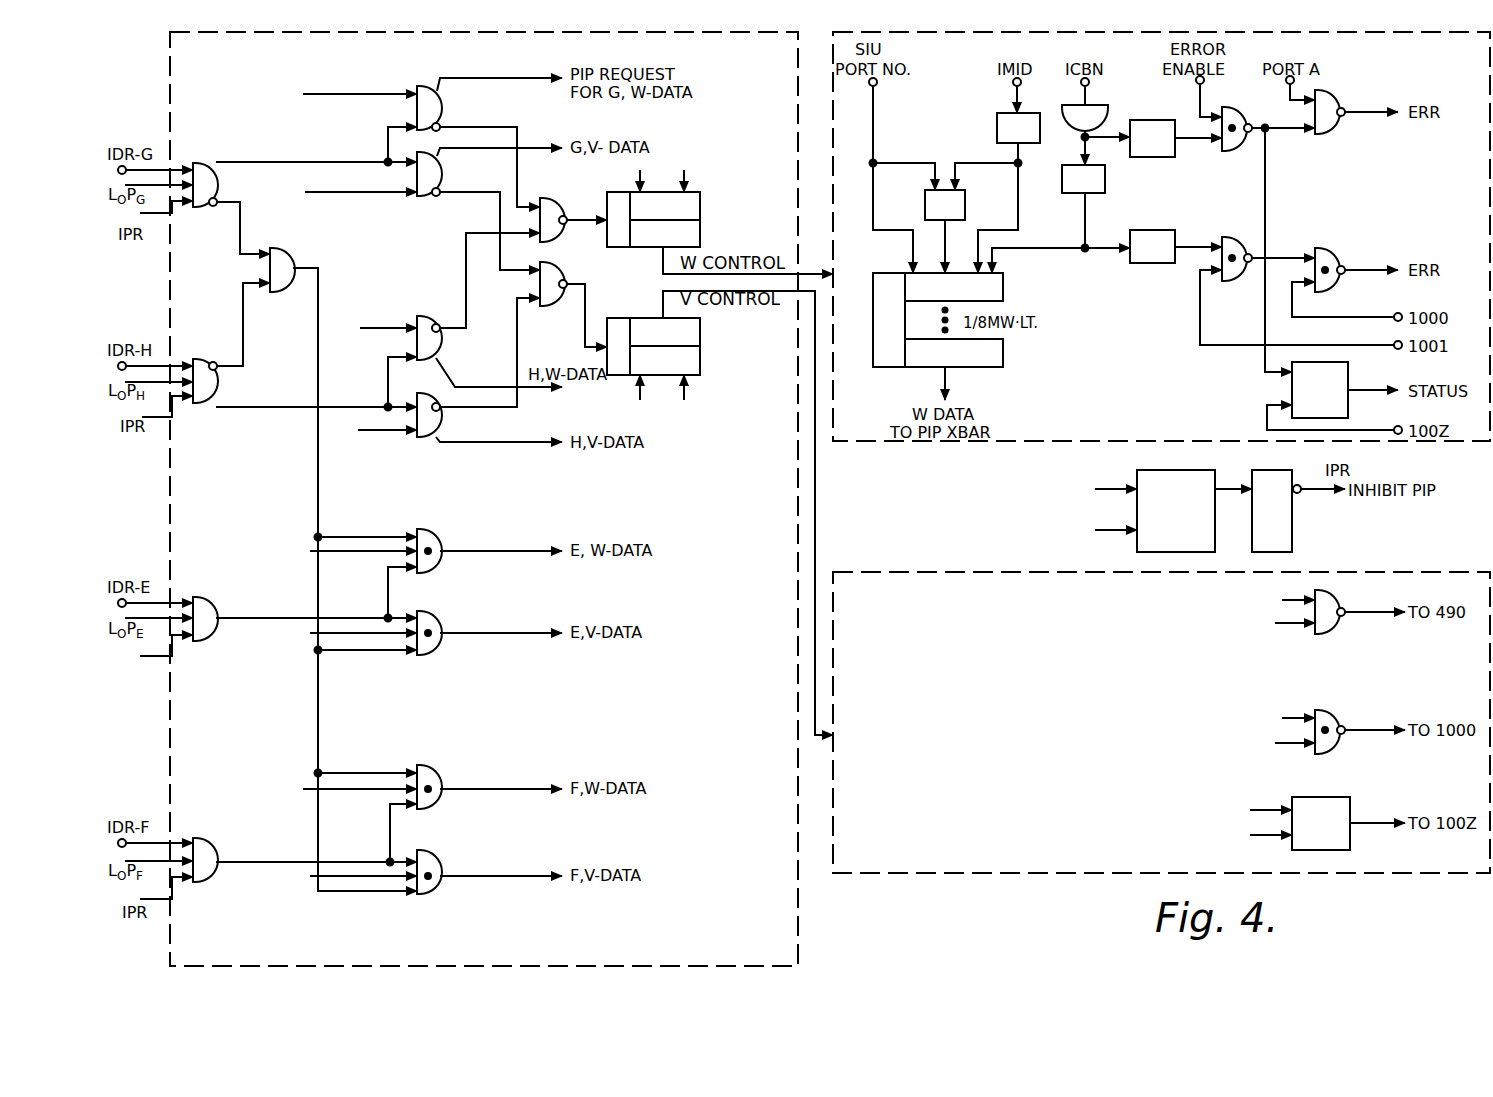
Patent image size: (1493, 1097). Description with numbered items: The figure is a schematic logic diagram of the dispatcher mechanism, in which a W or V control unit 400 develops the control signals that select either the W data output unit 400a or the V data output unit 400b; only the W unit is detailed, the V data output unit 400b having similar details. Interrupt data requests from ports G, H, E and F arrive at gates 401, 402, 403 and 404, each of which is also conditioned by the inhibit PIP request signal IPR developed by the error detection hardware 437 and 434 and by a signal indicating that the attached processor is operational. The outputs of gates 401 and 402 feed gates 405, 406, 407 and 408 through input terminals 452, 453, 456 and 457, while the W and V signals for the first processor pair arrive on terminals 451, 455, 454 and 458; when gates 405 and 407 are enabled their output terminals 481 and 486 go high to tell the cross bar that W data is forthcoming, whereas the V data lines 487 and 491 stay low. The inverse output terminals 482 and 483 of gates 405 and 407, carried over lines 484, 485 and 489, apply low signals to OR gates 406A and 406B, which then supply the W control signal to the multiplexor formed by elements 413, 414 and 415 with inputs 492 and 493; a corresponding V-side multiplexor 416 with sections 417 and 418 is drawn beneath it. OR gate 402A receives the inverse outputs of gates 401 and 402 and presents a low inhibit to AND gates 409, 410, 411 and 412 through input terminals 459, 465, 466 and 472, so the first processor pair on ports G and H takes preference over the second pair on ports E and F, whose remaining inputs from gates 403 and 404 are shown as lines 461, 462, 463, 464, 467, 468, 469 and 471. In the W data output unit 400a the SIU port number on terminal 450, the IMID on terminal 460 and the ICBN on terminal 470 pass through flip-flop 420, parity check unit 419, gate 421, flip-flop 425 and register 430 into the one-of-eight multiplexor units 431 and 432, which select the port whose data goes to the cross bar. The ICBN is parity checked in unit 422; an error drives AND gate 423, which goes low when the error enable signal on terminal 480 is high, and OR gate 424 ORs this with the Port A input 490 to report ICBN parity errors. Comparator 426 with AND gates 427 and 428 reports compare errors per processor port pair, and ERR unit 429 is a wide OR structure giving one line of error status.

The W or V control unit 400 is at (720, 933).
The W data output unit 400a is at (1150, 425).
The V data output unit 400b is at (1154, 853).
The gate 401 is at (202, 165).
The gate 402 is at (200, 402).
The OR gate 402A is at (283, 252).
The gate 403 is at (210, 612).
The gate 404 is at (210, 852).
The gate 405 is at (425, 87).
The gate 406 is at (441, 153).
The OR gate 406A is at (549, 200).
The OR gate 406B is at (548, 266).
The gate 407 is at (423, 317).
The gate 408 is at (419, 394).
The AND gate 409 is at (433, 538).
The AND gate 410 is at (448, 616).
The AND gate 411 is at (432, 766).
The AND gate 412 is at (448, 890).
The multiplexor element 413 is at (605, 205).
The multiplexor element 414 is at (703, 206).
The multiplexor element 415 is at (703, 228).
The V register 416 is at (620, 378).
The V-P0 register section 417 is at (700, 335).
The V-P1 register section 418 is at (700, 370).
The parity checker 419 is at (966, 205).
The flip-flop 420 is at (1027, 113).
The AND gate 421 is at (1098, 109).
The parity check unit 422 is at (1143, 120).
The AND gate 423 is at (1238, 98).
The OR gate 424 is at (1330, 92).
The flip-flop 425 is at (1106, 180).
The comparator 426 is at (1143, 230).
The AND gate 427 is at (1228, 236).
The AND gate 428 is at (1325, 250).
The ERR unit 429 is at (1290, 392).
The register 430 is at (878, 335).
The one of eight multiplexor unit 431 is at (1005, 285).
The one of eight multiplexor unit 432 is at (1005, 350).
The error detection hardware 434 is at (1252, 482).
The error detection hardware 437 is at (1143, 478).
The terminal 450 is at (878, 84).
The terminal 451 is at (390, 93).
The input terminal 452 is at (385, 126).
The input terminal 453 is at (352, 162).
The input terminal 454 is at (378, 193).
The terminal 455 is at (373, 330).
The input terminal 456 is at (388, 376).
The input terminal 457 is at (270, 406).
The input terminal 458 is at (390, 432).
The input terminal 459 is at (345, 537).
The terminal 460 is at (1013, 83).
The signal line 461 is at (371, 552).
The signal line 462 is at (392, 584).
The signal line 463 is at (284, 617).
The signal line 464 is at (356, 632).
The input terminal 465 is at (352, 651).
The input terminal 466 is at (345, 772).
The signal line 467 is at (390, 788).
The signal line 468 is at (390, 822).
The signal line 469 is at (340, 862).
The terminal 470 is at (1093, 82).
The signal line 471 is at (380, 879).
The input terminal 472 is at (352, 893).
The terminal 480 is at (1196, 86).
The output terminal 481 is at (465, 78).
The output terminal 482 is at (463, 127).
The output terminal 483 is at (470, 231).
The signal line 484 is at (500, 256).
The signal line 485 is at (517, 312).
The output terminal 486 is at (492, 385).
The V data line 487 is at (523, 148).
The signal line 489 is at (517, 362).
The port A input 490 is at (1287, 85).
The V data line 491 is at (493, 442).
The input 492 is at (643, 172).
The input 493 is at (687, 172).